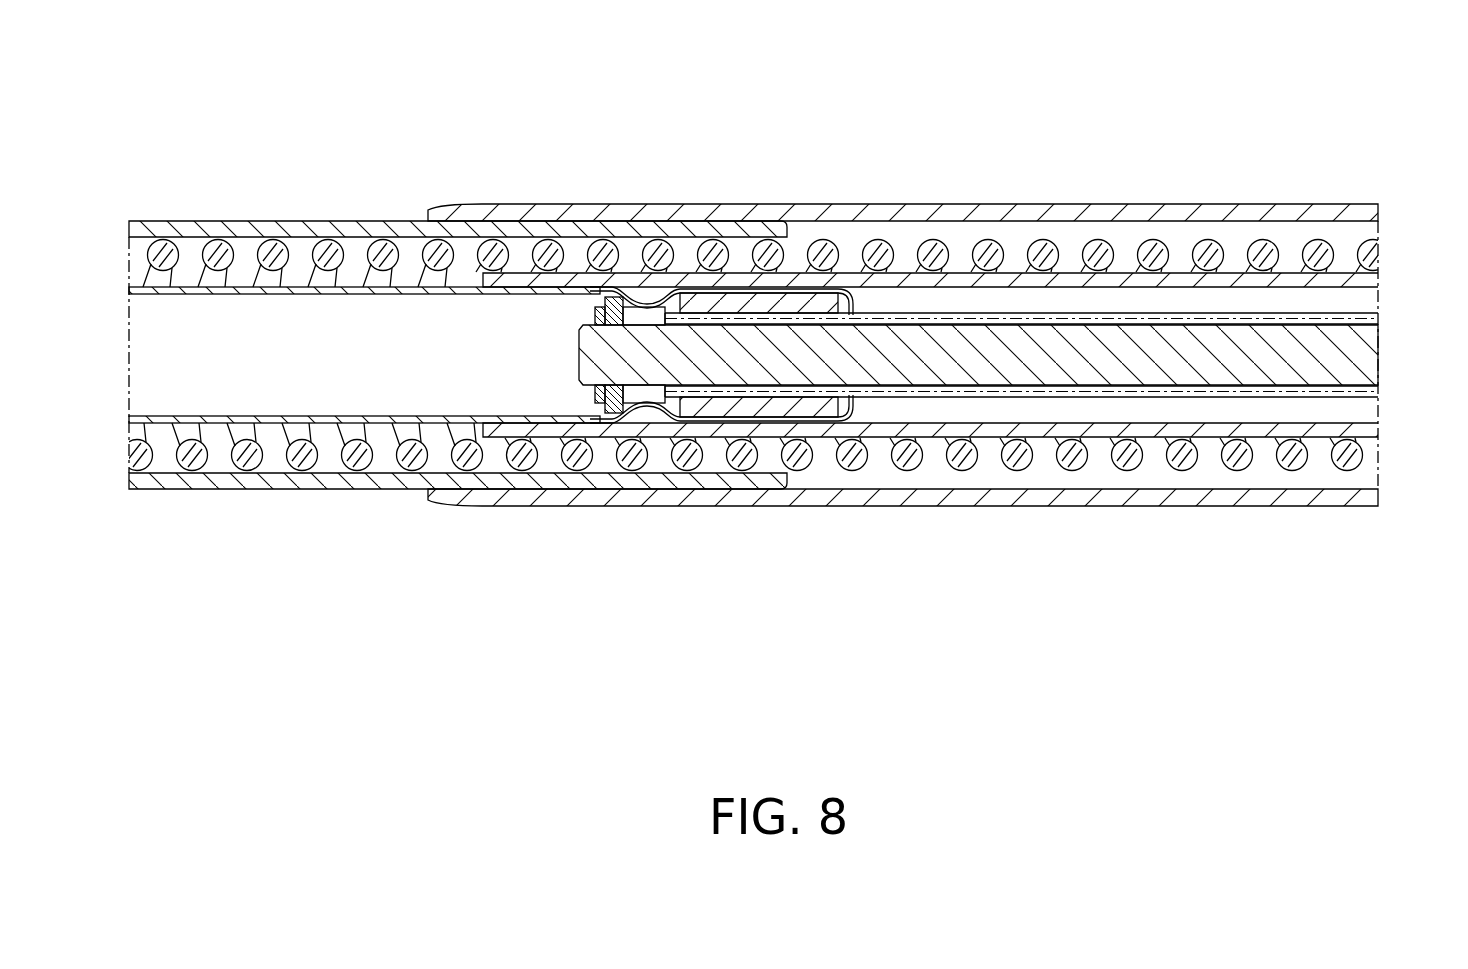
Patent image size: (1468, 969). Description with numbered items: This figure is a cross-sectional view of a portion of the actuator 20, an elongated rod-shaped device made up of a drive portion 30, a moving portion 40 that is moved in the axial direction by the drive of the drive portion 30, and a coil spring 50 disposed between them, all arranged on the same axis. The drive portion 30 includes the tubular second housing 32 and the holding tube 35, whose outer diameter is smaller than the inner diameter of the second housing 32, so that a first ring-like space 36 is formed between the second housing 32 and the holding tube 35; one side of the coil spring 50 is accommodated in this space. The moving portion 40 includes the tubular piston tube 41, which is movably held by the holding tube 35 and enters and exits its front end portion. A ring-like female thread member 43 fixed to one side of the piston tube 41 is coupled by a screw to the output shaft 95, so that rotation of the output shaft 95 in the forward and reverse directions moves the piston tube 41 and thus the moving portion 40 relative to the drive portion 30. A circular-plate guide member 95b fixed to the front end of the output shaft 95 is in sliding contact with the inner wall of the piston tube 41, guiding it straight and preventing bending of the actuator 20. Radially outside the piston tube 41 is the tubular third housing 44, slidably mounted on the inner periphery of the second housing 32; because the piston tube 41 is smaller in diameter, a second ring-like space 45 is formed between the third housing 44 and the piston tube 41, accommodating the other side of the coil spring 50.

The actuator 20 is at (807, 591).
The drive portion 30 is at (1287, 203).
The second housing 32 is at (912, 212).
The holding tube 35 is at (1183, 280).
The first ring-like space 36 is at (1204, 472).
The moving portion 40 is at (243, 218).
The piston tube 41 is at (285, 422).
The female thread member 43 is at (804, 300).
The third housing 44 is at (173, 482).
The second ring-like space 45 is at (302, 258).
The coil spring 50 is at (1047, 255).
The output shaft 95 is at (1323, 355).
The guide member 95b is at (592, 300).